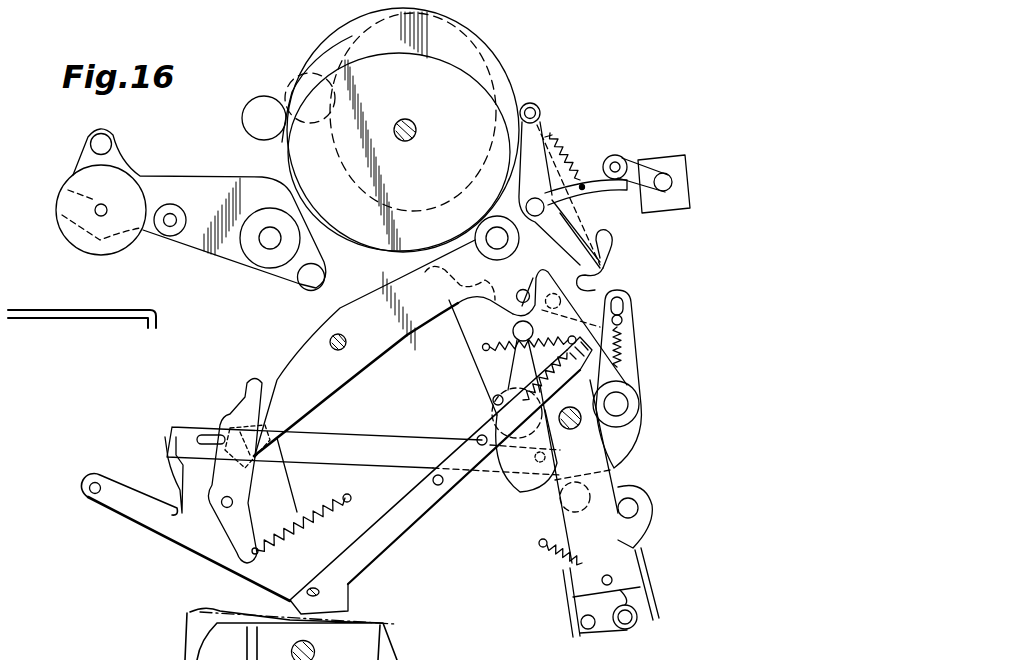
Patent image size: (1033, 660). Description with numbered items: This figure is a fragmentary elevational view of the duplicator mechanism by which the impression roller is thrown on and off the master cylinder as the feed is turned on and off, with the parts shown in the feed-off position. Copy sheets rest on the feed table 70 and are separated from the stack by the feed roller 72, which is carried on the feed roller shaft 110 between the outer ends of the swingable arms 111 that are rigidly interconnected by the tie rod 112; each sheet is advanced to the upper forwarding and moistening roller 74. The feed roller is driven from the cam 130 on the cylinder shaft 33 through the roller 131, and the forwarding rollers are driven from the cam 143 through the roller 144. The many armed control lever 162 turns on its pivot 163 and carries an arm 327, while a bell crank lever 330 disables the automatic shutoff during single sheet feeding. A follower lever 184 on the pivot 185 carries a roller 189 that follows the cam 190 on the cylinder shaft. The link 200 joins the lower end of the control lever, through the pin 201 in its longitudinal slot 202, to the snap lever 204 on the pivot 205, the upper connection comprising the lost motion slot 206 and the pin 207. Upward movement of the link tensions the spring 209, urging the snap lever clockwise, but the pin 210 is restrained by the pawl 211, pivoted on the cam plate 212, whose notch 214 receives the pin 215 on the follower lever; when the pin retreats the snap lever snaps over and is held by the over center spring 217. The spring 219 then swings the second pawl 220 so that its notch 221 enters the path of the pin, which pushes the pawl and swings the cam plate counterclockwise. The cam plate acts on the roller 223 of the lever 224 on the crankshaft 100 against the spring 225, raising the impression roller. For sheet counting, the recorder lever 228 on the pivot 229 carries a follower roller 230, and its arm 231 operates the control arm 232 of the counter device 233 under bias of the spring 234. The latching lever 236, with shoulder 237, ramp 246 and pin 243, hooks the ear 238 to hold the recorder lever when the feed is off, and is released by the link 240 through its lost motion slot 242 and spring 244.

The cylinder shaft 33 is at (416, 128).
The feed table 70 is at (45, 310).
The feed roller 72 is at (60, 196).
The upper forwarding and moistening roller 74 is at (262, 262).
The crankshaft 100 is at (638, 506).
The feed roller shaft 110 is at (95, 215).
The arms 111 is at (182, 178).
The tie rod 112 is at (91, 143).
The cam 130 is at (345, 40).
The roller 131 is at (241, 117).
The cam 143 is at (496, 62).
The roller 144 is at (300, 78).
The control lever 162 is at (185, 545).
The pivot 163 is at (220, 500).
The follower lever 184 is at (385, 362).
The pivot 185 is at (329, 340).
The roller 189 is at (475, 236).
The cam 190 is at (388, 255).
The link 200 is at (392, 540).
The pin 201 is at (290, 598).
The longitudinal slot 202 is at (330, 588).
The snap lever 204 is at (530, 495).
The pivot 205 is at (572, 428).
The lost motion slot 206 is at (506, 412).
The pin 207 is at (492, 398).
The spring 209 is at (620, 380).
The pin 210 is at (512, 327).
The pawl 211 is at (588, 295).
The cam plate 212 is at (636, 440).
The notch 214 is at (530, 255).
The pin 215 is at (520, 288).
The over center spring 217 is at (626, 630).
The spring 219 is at (492, 364).
The second pawl 220 is at (462, 338).
The notch 221 is at (457, 280).
The roller 223 is at (630, 486).
The lever 224 is at (645, 530).
The spring 225 is at (545, 566).
The recorder lever 228 is at (572, 223).
The pivot 229 is at (534, 198).
The follower roller 230 is at (537, 105).
The arm 231 is at (583, 184).
The control arm 232 is at (630, 158).
The counter device 233 is at (685, 180).
The spring 234 is at (562, 144).
The latching lever 236 is at (612, 252).
The shoulder 237 is at (606, 268).
The ear 238 is at (606, 276).
The link 240 is at (624, 344).
The lost motion slot 242 is at (625, 306).
The pin 243 is at (624, 320).
The spring 244 is at (622, 360).
The ramp 246 is at (610, 240).
The arm 327 is at (172, 460).
The bell crank lever 330 is at (390, 440).